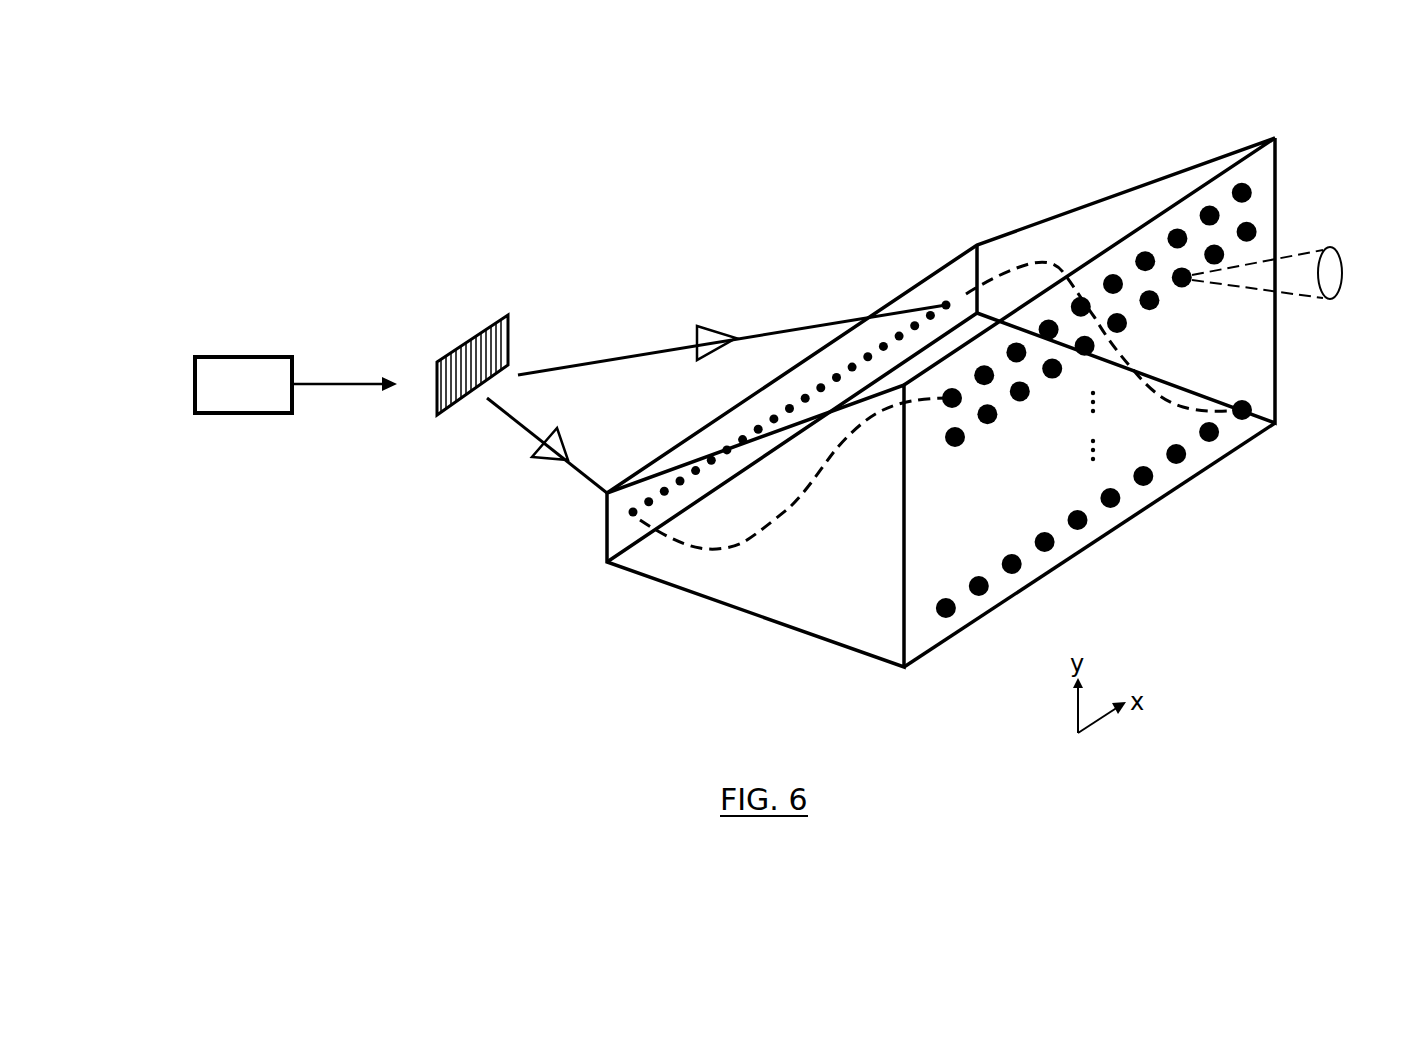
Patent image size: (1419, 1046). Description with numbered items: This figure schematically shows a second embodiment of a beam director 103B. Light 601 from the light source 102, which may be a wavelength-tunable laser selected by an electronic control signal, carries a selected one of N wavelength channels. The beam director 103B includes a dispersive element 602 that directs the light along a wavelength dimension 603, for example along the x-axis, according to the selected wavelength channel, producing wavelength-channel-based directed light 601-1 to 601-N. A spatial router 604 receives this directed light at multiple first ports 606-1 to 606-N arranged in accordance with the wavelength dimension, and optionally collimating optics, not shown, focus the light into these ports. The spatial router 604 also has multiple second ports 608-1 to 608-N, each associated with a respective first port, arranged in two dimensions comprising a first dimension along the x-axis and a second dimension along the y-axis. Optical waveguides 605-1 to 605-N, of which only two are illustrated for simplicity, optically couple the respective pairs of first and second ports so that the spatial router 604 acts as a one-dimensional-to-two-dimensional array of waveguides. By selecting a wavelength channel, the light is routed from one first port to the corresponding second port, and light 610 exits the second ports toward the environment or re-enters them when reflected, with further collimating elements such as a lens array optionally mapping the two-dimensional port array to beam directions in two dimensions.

The light source 102 is at (250, 355).
The light 601 is at (308, 383).
The dispersive element 602 is at (443, 417).
The wavelength dimension 603 is at (610, 417).
The wavelength-channel-based directed light 601-1 is at (523, 432).
The wavelength-channel-based directed light 601-N is at (740, 333).
The beam director 103B is at (1270, 133).
The spatial router 604 is at (790, 627).
The optical waveguide 605-1 is at (757, 542).
The optical waveguide 605-N is at (1012, 275).
The first port 606-1 is at (633, 516).
The first port 606-N is at (946, 300).
The second port 608-1 is at (952, 447).
The second port 608-N is at (1242, 422).
The light 610 is at (1310, 260).